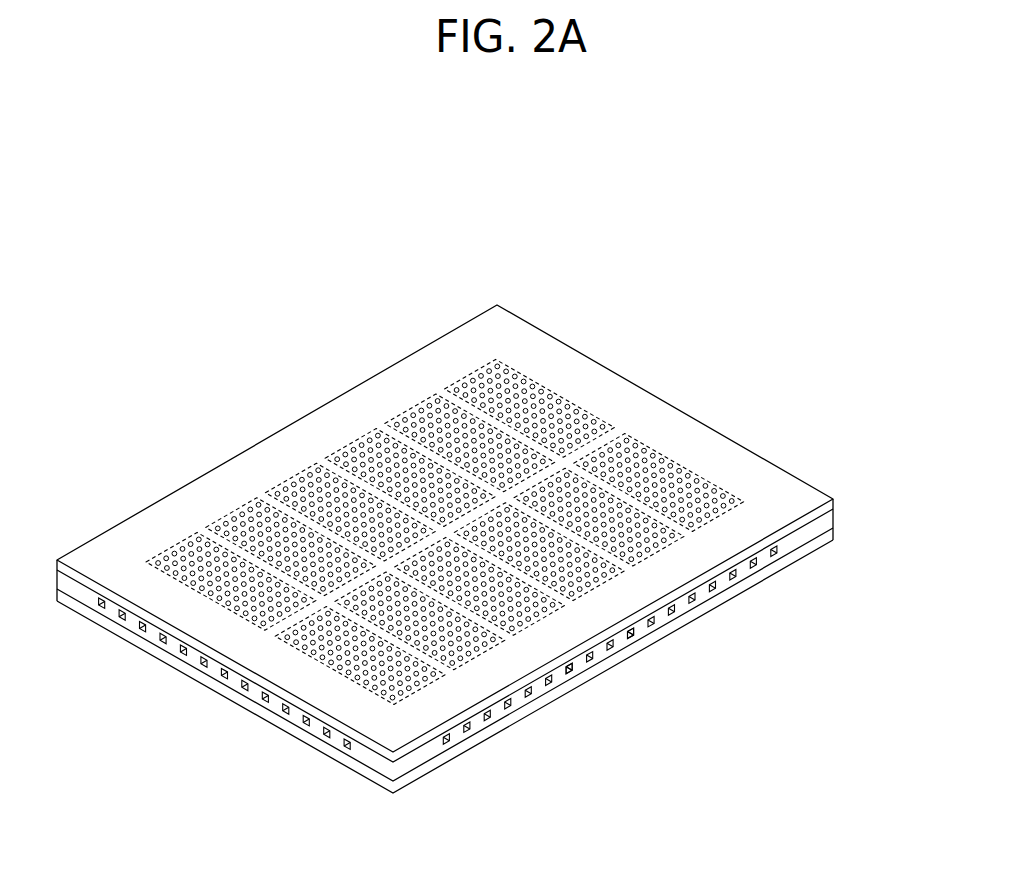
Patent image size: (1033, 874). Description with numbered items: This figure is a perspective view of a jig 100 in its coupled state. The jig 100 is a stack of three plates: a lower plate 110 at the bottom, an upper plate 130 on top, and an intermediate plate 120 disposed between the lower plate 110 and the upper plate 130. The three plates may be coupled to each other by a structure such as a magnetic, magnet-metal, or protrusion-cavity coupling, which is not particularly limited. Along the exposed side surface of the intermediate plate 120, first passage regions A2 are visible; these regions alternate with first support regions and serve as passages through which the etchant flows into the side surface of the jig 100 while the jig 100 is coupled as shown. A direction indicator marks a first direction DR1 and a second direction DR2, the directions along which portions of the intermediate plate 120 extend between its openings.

The jig 100 is at (515, 549).
The upper plate 130 is at (835, 505).
The intermediate plate 120 is at (823, 525).
The lower plate 110 is at (823, 542).
The first passage regions A2 is at (568, 670).
The first direction DR1 is at (733, 812).
The second direction DR2 is at (733, 812).